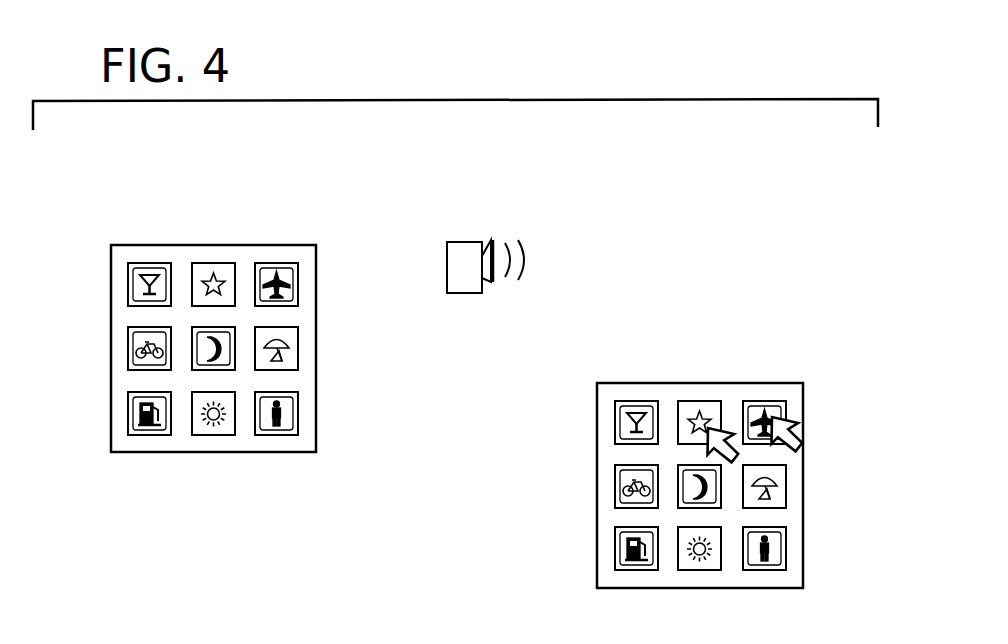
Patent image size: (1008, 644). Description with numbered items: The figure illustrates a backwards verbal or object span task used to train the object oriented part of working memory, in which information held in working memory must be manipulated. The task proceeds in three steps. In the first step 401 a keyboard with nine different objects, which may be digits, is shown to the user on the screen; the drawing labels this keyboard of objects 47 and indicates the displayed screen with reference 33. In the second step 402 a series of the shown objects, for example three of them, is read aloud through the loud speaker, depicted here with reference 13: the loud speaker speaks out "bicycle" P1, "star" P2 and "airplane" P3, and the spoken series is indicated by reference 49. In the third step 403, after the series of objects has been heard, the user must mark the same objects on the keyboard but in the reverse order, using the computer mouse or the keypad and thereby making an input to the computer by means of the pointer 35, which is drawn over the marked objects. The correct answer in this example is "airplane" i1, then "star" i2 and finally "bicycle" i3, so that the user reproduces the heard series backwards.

The loudspeaker 13 is at (463, 256).
The display screen 33 is at (336, 284).
The pointer 35 is at (800, 445).
The icon matrix 47 is at (137, 245).
The icon set / presentation 49 is at (322, 345).
The step of showing keyboard of objects 401 is at (227, 321).
The step of reading objects aloud 402 is at (464, 253).
The step of marking objects in reverse order 403 is at (720, 481).
The spoken object "bicycle" P1 is at (132, 350).
The spoken object "star" P2 is at (204, 270).
The spoken object "airplane" P3 is at (268, 268).
The correct first answer "airplane" i1 is at (760, 420).
The correct second answer "star" i2 is at (695, 410).
The correct third answer "bicycle" i3 is at (617, 487).